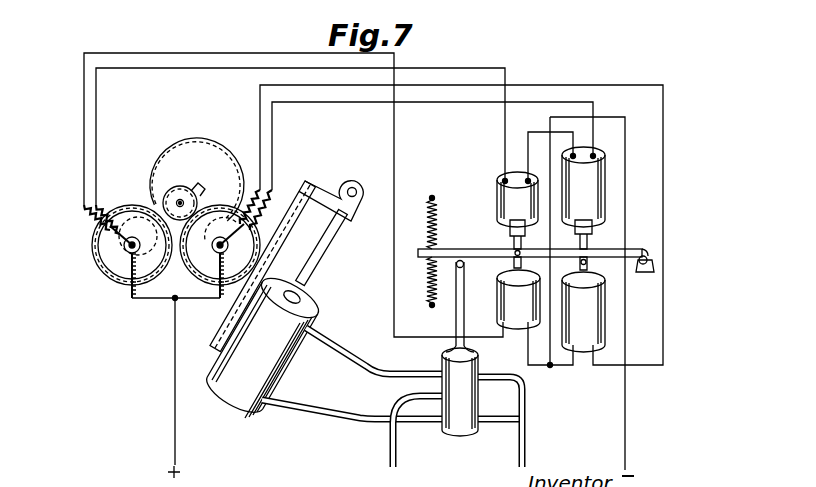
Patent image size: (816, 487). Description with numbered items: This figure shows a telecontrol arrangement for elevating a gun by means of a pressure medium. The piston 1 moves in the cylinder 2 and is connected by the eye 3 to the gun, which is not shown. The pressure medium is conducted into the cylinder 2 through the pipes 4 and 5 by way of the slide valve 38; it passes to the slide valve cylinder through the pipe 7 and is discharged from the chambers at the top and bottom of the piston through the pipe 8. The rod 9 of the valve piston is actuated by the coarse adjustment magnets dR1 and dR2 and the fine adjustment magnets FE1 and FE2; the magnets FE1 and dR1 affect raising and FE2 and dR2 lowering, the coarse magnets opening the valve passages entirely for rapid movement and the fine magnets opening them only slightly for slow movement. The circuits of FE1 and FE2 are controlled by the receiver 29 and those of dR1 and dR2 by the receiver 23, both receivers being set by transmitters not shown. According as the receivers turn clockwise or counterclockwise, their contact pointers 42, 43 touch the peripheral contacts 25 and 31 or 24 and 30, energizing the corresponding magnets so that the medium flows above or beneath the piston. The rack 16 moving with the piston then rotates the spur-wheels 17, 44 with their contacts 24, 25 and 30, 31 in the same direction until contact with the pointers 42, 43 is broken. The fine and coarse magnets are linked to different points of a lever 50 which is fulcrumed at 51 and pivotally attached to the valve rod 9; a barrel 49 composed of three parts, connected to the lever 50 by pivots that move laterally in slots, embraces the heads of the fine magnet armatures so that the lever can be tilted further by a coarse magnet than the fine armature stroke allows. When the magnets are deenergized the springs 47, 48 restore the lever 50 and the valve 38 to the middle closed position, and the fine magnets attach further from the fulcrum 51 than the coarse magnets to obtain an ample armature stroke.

The piston 1 is at (316, 264).
The cylinder 2 is at (280, 360).
The eye 3 is at (358, 190).
The pipe 4 is at (348, 358).
The pipe 5 is at (332, 414).
The pipe 7 is at (399, 455).
The pipe 8 is at (519, 450).
The valve rod 9 is at (455, 320).
The rack 16 is at (279, 248).
The spur-wheel 17 is at (212, 298).
The receiver 23 is at (219, 248).
The peripheral contact 24 is at (243, 185).
The peripheral contact 25 is at (256, 222).
The receiver 29 is at (130, 247).
The peripheral contact 30 is at (97, 220).
The peripheral contact 31 is at (110, 212).
The slide valve 38 is at (478, 397).
The contact pointer 42 is at (230, 225).
The contact pointer 43 is at (126, 226).
The spur-wheel 44 is at (122, 283).
The spring 47 is at (427, 222).
The spring 48 is at (427, 282).
The barrel 49 is at (524, 246).
The lever 50 is at (597, 250).
The fulcrum 51 is at (643, 255).
The fine adjustment magnet FE1 is at (497, 199).
The fine adjustment magnet FE2 is at (499, 310).
The coarse adjustment magnet dR1 is at (605, 193).
The coarse adjustment magnet dR2 is at (603, 315).